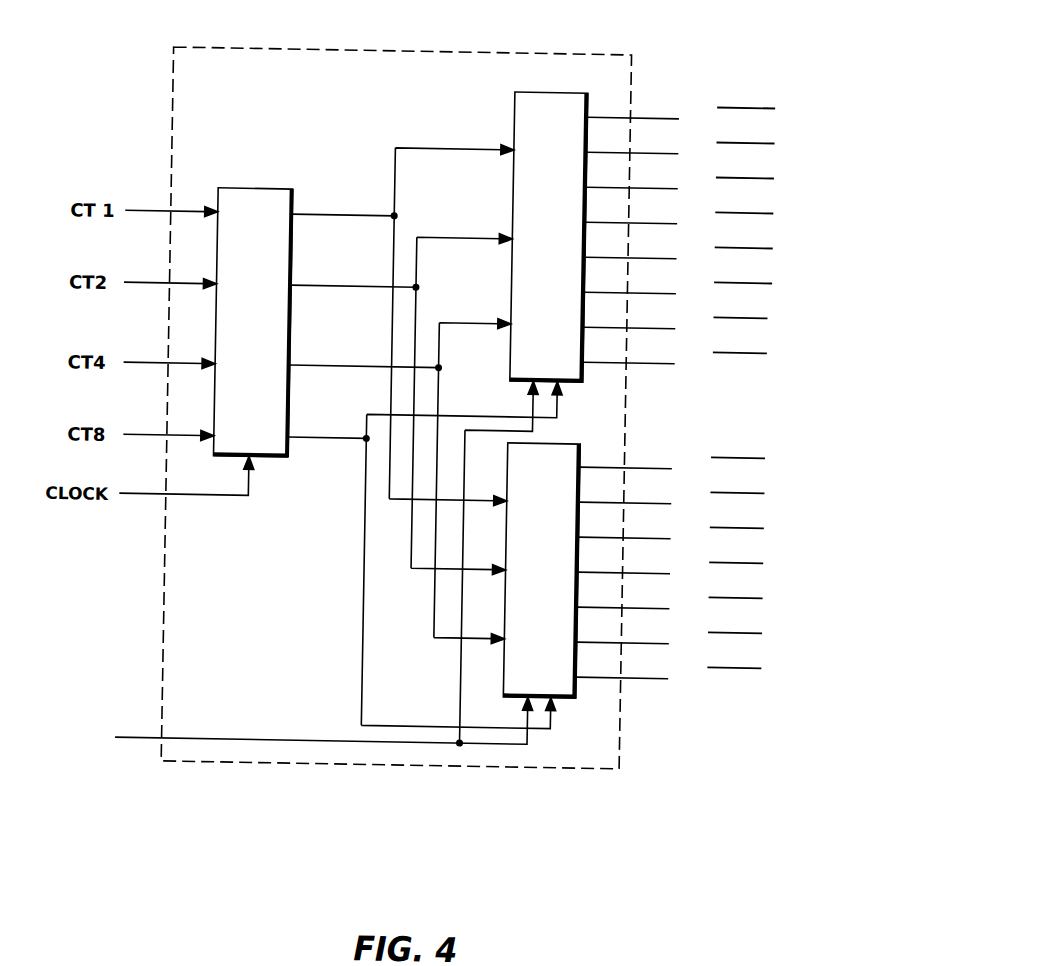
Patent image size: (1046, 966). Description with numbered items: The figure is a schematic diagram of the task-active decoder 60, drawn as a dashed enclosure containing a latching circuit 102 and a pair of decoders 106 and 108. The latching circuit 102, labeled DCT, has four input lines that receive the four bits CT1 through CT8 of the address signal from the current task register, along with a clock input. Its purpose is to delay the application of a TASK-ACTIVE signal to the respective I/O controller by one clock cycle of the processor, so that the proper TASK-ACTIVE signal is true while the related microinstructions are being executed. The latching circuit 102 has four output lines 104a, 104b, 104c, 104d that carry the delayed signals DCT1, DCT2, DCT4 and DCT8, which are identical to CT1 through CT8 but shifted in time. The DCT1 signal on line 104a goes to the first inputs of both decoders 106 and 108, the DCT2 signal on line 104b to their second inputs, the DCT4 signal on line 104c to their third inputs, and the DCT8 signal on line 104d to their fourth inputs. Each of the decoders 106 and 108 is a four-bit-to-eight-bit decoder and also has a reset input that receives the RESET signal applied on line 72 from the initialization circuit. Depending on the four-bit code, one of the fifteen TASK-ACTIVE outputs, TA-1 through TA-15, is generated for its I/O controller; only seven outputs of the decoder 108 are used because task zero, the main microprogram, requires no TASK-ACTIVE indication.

The task-active decoder 60 is at (435, 52).
The reset line 72 is at (139, 744).
The latching circuit 102 is at (251, 191).
The output line 104a is at (357, 214).
The output line 104b is at (361, 286).
The output line 104c is at (360, 366).
The output line 104d is at (355, 437).
The decoder 106 is at (510, 106).
The decoder 108 is at (579, 699).